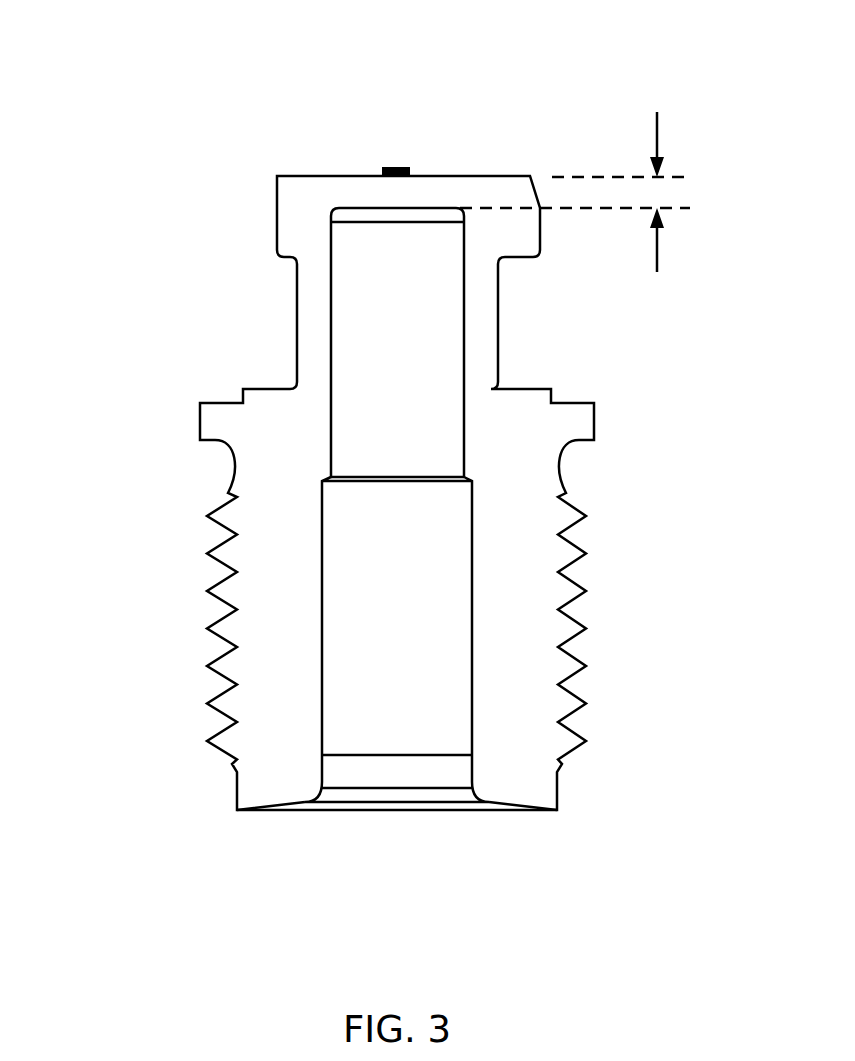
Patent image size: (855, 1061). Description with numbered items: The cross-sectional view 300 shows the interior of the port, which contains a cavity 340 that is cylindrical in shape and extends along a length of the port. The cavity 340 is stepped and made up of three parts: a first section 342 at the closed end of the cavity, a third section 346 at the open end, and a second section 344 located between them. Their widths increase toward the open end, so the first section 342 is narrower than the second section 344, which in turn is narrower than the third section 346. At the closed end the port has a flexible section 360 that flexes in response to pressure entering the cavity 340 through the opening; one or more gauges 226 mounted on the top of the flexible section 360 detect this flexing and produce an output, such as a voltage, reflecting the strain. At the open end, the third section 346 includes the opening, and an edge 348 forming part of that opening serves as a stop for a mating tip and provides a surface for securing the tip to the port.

The cross-sectional view 300 is at (112, 56).
The gauges 226 is at (393, 165).
The cavity 340 is at (223, 207).
The first section 342 is at (405, 312).
The second section 344 is at (397, 590).
The third section 346 is at (453, 777).
The edge 348 is at (510, 805).
The flexible section 360 is at (575, 178).